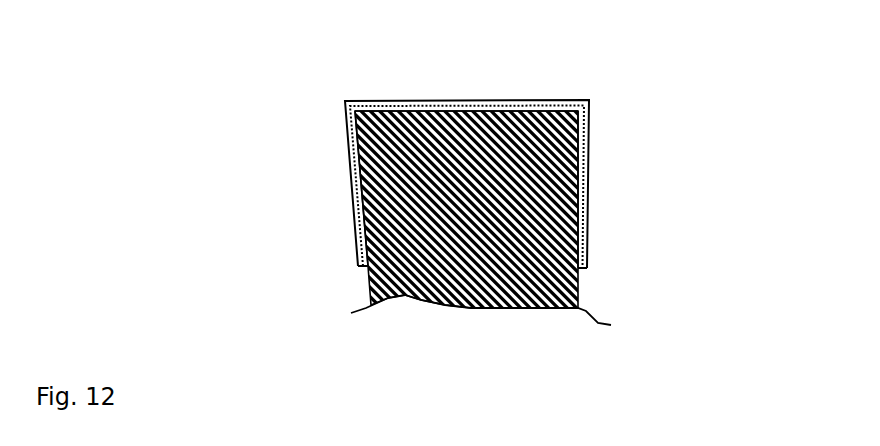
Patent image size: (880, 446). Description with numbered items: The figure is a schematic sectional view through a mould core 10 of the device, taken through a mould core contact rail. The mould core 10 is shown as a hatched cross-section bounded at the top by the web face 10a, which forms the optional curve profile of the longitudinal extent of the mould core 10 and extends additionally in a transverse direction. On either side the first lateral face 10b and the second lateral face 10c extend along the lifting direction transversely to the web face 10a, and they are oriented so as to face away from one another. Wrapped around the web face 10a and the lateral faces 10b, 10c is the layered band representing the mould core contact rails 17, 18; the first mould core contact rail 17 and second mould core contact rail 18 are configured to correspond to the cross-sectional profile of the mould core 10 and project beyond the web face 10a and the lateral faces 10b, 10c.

The mould core 10 is at (497, 273).
The web face 10a is at (472, 93).
The first lateral face 10b is at (351, 229).
The second lateral face 10c is at (577, 220).
The first mould core contact rail 17 is at (583, 97).
The second mould core contact rail 18 is at (550, 180).